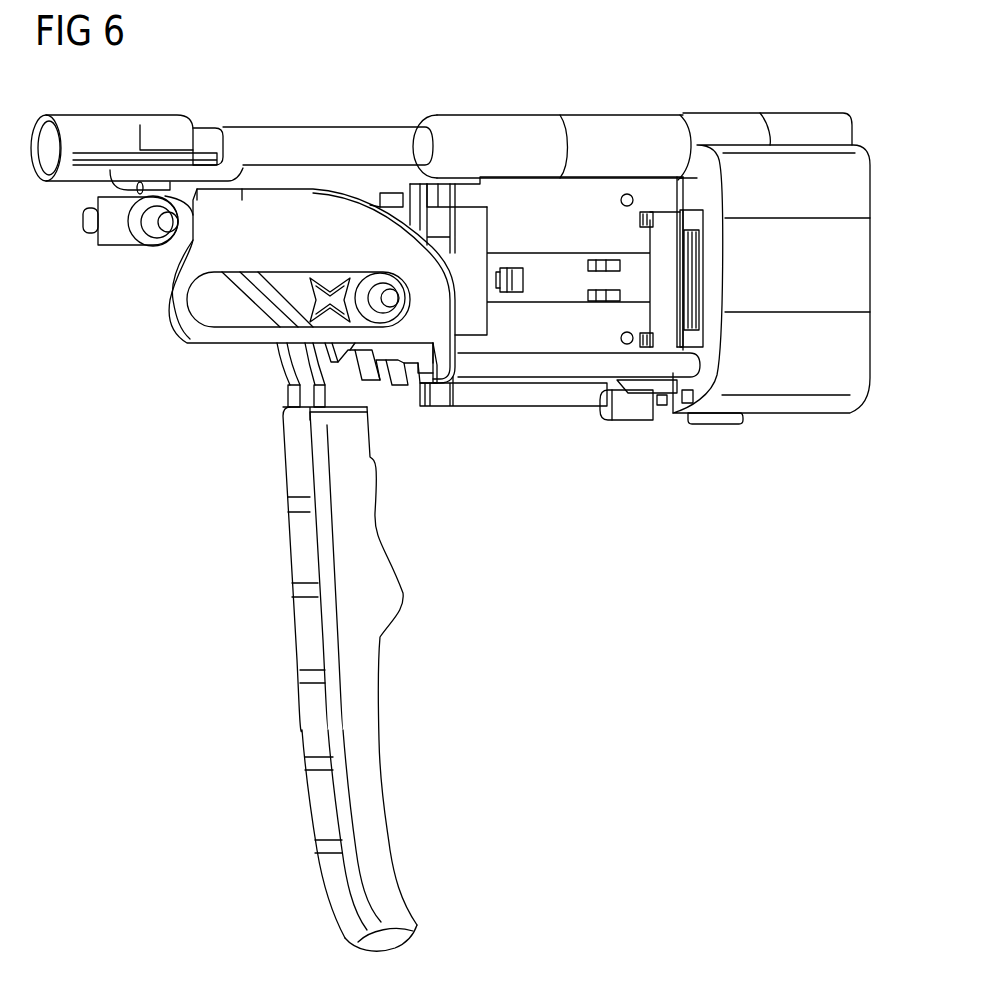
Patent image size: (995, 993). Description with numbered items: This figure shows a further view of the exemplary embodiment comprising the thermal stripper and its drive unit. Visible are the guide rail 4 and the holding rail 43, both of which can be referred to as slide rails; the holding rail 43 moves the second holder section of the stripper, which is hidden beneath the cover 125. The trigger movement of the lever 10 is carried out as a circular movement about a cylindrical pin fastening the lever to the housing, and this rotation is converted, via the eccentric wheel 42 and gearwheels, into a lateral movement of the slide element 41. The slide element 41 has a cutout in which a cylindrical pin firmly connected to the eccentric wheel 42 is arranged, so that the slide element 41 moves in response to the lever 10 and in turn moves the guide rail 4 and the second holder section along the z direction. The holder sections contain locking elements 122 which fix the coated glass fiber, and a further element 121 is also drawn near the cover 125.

The guide rod 4 is at (293, 136).
The lever 10 is at (373, 702).
The slide element 41 is at (190, 333).
The eccentric wheel 42 is at (386, 385).
The holding rail 43 is at (513, 375).
The mounting plate 121 is at (713, 424).
The locking element 122 is at (630, 421).
The cover 125 is at (812, 400).